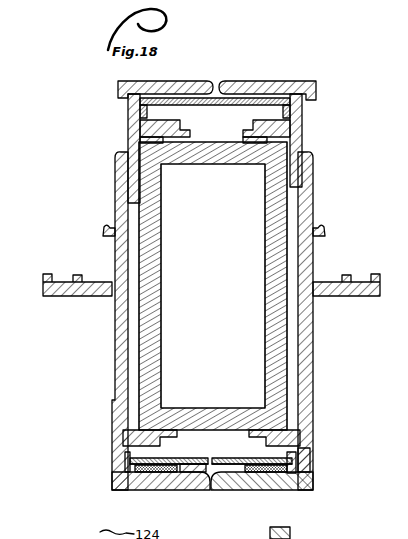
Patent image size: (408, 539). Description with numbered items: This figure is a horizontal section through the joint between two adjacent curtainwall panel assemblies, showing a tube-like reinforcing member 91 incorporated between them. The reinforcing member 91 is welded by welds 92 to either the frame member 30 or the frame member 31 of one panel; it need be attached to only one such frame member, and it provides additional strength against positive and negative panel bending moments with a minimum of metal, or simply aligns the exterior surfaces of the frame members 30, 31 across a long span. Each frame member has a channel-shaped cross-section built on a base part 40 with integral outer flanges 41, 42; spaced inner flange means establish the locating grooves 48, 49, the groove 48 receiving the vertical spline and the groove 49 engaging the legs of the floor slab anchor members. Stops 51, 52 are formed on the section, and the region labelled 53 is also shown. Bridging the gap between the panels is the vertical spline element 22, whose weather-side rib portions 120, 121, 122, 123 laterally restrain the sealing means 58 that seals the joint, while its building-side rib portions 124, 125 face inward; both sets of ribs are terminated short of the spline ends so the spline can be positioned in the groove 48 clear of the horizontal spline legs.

The vertical spline element 22 is at (208, 492).
The frame member 30 is at (115, 408).
The frame member 31 is at (313, 462).
The base part 40 is at (115, 320).
The outer flange 41 is at (152, 490).
The outer flange 42 is at (120, 81).
The locating groove 48 is at (167, 453).
The locating groove 49 is at (143, 112).
The stop 51 is at (58, 298).
The stop 52 is at (104, 230).
The cap side wall 53 is at (128, 133).
The sealing means 58 is at (140, 474).
The tube-like reinforcing member 91 is at (313, 408).
The weld 92 is at (186, 141).
The rib portion 120 is at (112, 475).
The rib portion 121 is at (180, 489).
The rib portion 122 is at (236, 490).
The rib portion 123 is at (310, 483).
The rib portion 124 is at (298, 452).
The rib portion 125 is at (128, 452).